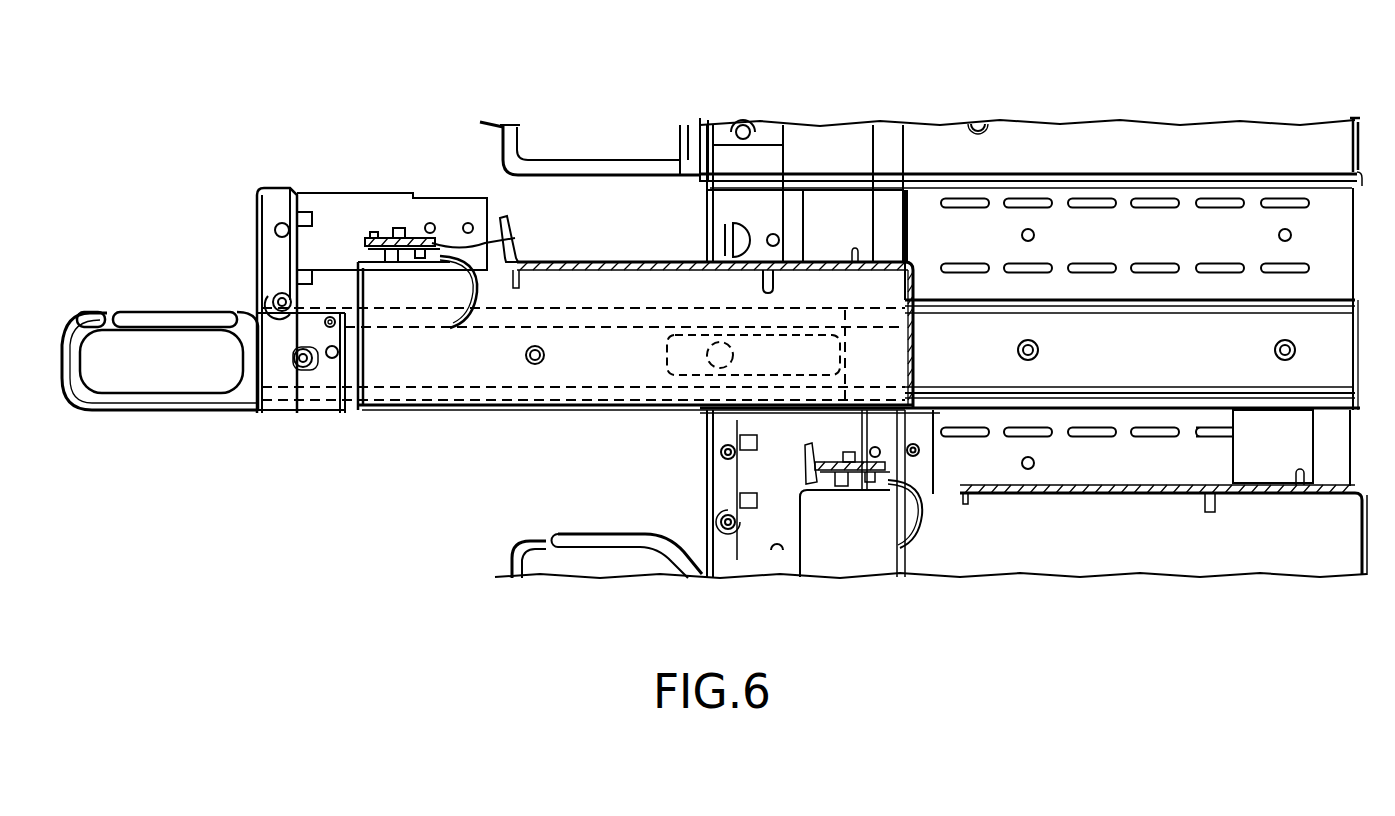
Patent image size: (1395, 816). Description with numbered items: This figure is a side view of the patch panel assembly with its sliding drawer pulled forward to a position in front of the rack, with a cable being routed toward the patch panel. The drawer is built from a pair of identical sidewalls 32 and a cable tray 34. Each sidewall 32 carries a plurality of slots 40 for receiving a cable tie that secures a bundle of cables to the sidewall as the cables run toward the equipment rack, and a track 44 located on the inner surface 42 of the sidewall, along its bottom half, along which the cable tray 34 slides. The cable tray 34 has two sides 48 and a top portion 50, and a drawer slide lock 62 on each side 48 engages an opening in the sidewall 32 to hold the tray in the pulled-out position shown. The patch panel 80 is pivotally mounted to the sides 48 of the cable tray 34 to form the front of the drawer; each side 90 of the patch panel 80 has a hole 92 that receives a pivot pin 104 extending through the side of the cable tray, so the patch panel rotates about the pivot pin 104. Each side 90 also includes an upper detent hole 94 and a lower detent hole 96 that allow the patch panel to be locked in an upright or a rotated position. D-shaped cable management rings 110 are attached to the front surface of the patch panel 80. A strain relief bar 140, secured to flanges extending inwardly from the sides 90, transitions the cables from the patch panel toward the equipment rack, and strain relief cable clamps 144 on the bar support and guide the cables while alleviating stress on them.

The sidewall 32 is at (1248, 247).
The cable tray 34 is at (590, 262).
The slot 40 is at (1287, 200).
The inner surface 42 is at (1340, 230).
The track 44 is at (1248, 307).
The side 48 is at (537, 262).
The top portion 50 is at (633, 262).
The drawer slide lock 62 is at (718, 355).
The patch panel 80 is at (258, 213).
The side of the patch panel 90 is at (323, 203).
The hole 92 is at (278, 296).
The upper detent hole 94 is at (280, 222).
The lower detent hole 96 is at (330, 362).
The pivot pin 104 is at (273, 300).
The D-shaped cable management ring 110 is at (150, 412).
The strain relief bar 140 is at (448, 256).
The strain relief cable clamp 144 is at (498, 278).